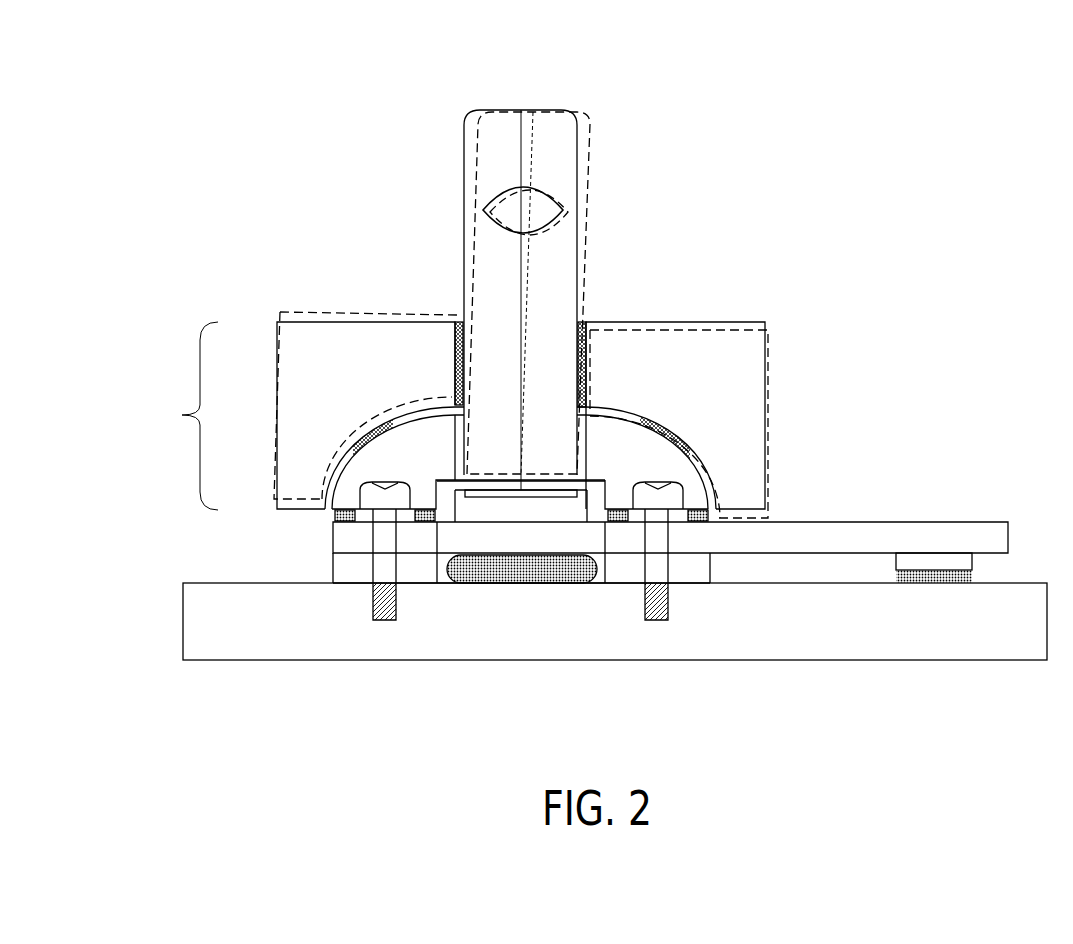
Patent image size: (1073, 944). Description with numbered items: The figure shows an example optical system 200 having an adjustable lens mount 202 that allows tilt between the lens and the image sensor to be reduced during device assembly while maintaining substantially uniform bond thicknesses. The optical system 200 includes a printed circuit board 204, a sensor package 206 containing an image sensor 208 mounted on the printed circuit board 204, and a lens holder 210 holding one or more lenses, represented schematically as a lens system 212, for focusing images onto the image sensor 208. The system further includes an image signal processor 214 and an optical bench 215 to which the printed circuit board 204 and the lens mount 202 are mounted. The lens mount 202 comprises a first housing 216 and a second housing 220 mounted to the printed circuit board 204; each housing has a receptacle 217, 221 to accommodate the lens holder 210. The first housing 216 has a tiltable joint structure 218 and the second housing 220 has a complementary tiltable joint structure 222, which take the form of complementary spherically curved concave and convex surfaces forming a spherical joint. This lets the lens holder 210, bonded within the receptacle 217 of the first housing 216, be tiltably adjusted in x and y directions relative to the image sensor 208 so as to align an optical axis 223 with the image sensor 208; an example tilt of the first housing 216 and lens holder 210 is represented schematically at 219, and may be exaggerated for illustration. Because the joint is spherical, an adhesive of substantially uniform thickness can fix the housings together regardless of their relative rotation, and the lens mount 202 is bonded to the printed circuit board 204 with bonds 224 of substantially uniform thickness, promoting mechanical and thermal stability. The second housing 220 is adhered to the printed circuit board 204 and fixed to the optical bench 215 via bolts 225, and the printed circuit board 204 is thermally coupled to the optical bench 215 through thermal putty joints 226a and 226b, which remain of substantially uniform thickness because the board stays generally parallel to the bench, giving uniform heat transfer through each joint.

The optical system 200 is at (932, 118).
The lens mount 202 is at (177, 416).
The printed circuit board 204 is at (820, 522).
The sensor package 206 is at (588, 500).
The image sensor 208 is at (497, 498).
The lens holder 210 is at (577, 218).
The lens system 212 is at (548, 192).
The image signal processor 214 is at (972, 560).
The optical bench 215 is at (613, 639).
The first housing 216 is at (396, 372).
The receptacle 217 is at (582, 322).
The tiltable joint structure 218 is at (700, 450).
The tilt 219 is at (335, 316).
The second housing 220 is at (434, 469).
The receptacle 221 is at (582, 410).
The complementary tiltable joint structure 222 is at (638, 420).
The optical axis 223 is at (521, 399).
The bonds 224 is at (425, 515).
The bolts 225 is at (373, 604).
The thermal putty joint 226a is at (520, 585).
The thermal putty joint 226b is at (928, 585).